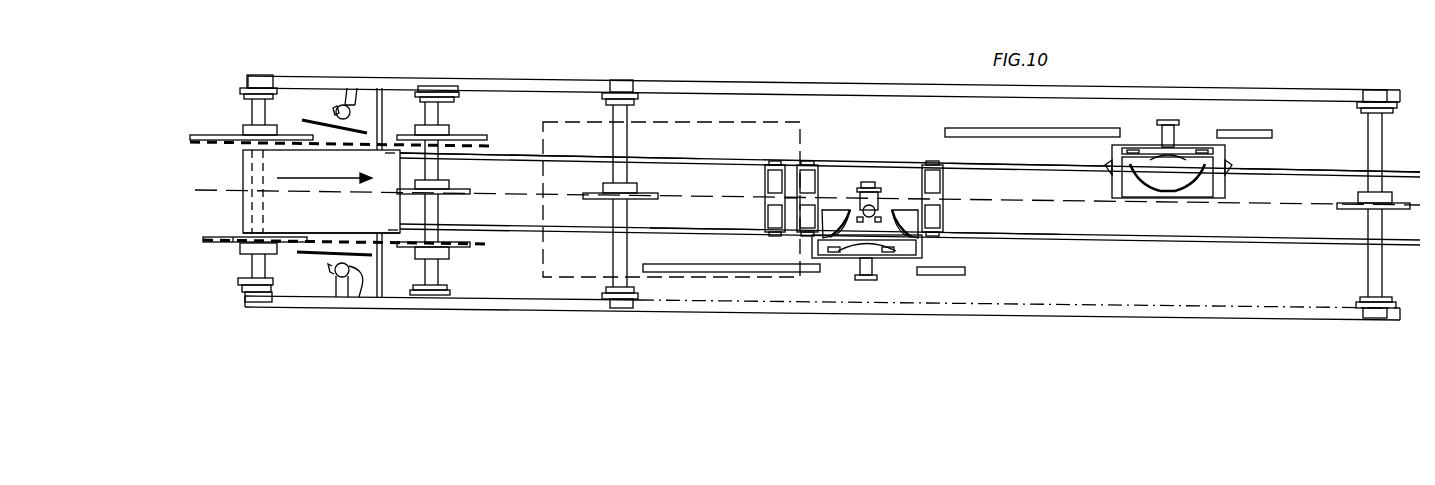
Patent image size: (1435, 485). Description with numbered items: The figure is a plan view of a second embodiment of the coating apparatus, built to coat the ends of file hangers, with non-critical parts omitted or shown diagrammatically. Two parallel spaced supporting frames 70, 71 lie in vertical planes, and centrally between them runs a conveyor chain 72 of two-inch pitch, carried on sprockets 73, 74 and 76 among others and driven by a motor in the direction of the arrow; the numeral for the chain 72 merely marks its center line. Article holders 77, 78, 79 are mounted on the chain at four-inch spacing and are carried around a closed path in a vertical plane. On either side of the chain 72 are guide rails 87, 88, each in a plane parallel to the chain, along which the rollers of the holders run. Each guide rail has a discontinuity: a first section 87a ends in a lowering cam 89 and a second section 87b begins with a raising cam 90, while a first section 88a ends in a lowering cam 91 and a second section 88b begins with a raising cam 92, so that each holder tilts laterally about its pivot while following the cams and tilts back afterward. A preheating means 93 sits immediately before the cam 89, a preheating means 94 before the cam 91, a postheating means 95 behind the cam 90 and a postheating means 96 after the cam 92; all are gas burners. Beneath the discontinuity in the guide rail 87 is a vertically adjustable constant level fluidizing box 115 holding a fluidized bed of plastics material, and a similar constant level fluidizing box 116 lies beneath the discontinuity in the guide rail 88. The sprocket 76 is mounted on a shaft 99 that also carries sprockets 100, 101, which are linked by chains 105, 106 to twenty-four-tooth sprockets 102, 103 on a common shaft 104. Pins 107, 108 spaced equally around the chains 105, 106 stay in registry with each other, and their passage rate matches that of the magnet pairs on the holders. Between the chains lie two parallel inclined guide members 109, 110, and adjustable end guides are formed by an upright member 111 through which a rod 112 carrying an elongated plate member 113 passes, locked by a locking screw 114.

The supporting frame 70 is at (1099, 302).
The supporting frame 71 is at (963, 86).
The chain 72 is at (534, 193).
The sprocket 73 is at (591, 200).
The sprocket 74 is at (1342, 206).
The sprocket 76 is at (485, 176).
The article holder 77 is at (825, 182).
The article holder 78 is at (871, 182).
The article holder 79 is at (951, 181).
The guide rail 87 is at (840, 170).
The first section of guide rail 87a is at (1006, 172).
The second section of guide rail 87b is at (1317, 168).
The guide rail 88 is at (1062, 241).
The first section of guide rail 88a is at (730, 238).
The second section of guide rail 88b is at (988, 241).
The lowering cam 89 is at (1130, 166).
The raising cam 90 is at (1204, 201).
The lowering cam 91 is at (851, 255).
The raising cam 92 is at (908, 213).
The preheating means 93 is at (1064, 132).
The preheating means 94 is at (707, 273).
The postheating means 95 is at (1265, 134).
The postheating means 96 is at (958, 275).
The shaft 99 is at (434, 208).
The sprocket 100 is at (464, 135).
The sprocket 101 is at (457, 253).
The sprocket 102 is at (228, 138).
The sprocket 103 is at (228, 247).
The common shaft 104 is at (252, 280).
The chain 105 is at (394, 136).
The chain 106 is at (233, 236).
The pin 107 is at (195, 142).
The pin 108 is at (197, 237).
The guide member 109 is at (280, 150).
The guide member 110 is at (318, 233).
The upright member 111 is at (345, 104).
The rod 112 is at (347, 92).
The elongated plate member 113 is at (364, 130).
The locking screw 114 is at (330, 118).
The constant level fluidizing box 115 is at (1197, 147).
The constant level fluidizing box 116 is at (908, 256).